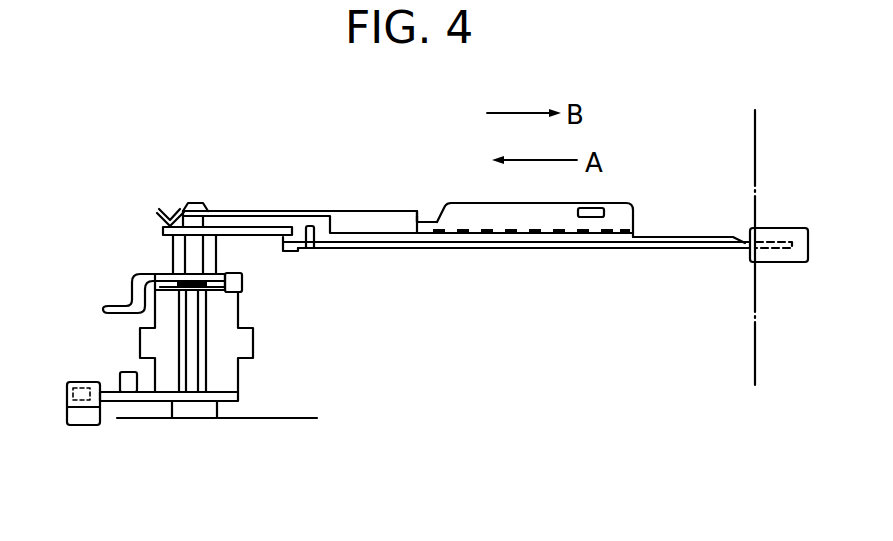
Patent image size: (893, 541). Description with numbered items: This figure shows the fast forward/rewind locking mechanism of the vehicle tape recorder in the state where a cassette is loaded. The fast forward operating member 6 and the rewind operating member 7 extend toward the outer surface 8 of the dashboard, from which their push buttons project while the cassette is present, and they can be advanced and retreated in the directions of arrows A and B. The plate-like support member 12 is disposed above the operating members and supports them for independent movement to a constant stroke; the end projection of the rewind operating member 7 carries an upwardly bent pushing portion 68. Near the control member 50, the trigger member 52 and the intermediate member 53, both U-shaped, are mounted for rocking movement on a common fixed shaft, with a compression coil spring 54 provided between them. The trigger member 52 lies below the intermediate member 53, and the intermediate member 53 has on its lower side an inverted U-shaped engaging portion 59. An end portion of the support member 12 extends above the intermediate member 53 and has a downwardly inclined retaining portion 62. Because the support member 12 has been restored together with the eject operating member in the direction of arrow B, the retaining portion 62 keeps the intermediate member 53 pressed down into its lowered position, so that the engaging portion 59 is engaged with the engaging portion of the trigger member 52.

The fast forward operating member 6 is at (678, 237).
The rewind operating member 7 is at (563, 248).
The outer surface of the dashboard 8 is at (757, 172).
The support member 12 is at (288, 213).
The control member 50 is at (82, 425).
The trigger member 52 is at (141, 342).
The intermediate member 53 is at (173, 252).
The compression coil spring 54 is at (209, 284).
The inverted U-shaped engaging portion 59 is at (242, 283).
The retaining portion 62 is at (158, 215).
The pushing portion 68 is at (314, 244).